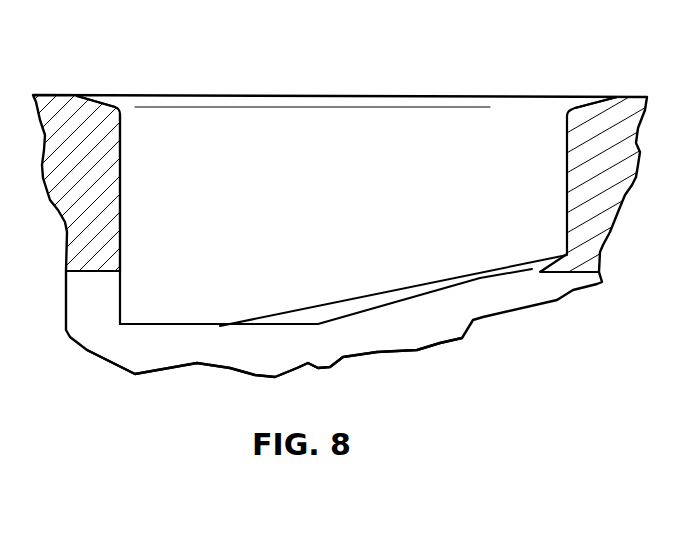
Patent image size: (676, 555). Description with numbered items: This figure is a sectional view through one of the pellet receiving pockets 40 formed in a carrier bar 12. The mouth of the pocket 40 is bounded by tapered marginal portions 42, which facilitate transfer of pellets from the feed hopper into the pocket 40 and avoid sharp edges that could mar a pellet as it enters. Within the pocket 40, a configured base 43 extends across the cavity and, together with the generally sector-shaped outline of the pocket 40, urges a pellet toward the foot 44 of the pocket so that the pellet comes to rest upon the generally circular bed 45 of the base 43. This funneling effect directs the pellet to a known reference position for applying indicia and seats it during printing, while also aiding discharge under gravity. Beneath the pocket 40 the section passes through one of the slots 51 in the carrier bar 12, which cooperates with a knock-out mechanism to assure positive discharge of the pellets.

The carrier bar 12 is at (605, 186).
The pellet receiving pocket 40 is at (363, 90).
The tapered marginal portion 42 is at (100, 100).
The configured base 43 is at (361, 295).
The foot of the pocket 44 is at (122, 231).
The generally circular bed 45 is at (165, 322).
The slot 51 is at (256, 360).